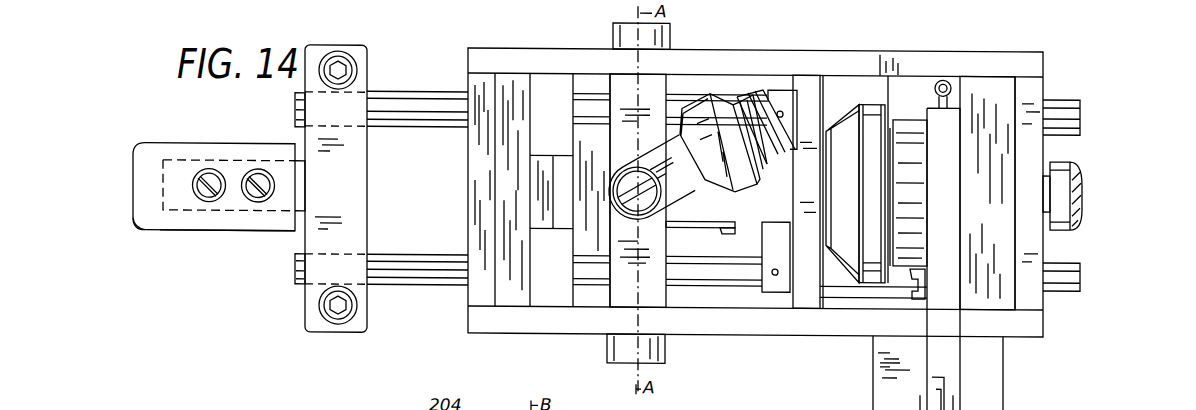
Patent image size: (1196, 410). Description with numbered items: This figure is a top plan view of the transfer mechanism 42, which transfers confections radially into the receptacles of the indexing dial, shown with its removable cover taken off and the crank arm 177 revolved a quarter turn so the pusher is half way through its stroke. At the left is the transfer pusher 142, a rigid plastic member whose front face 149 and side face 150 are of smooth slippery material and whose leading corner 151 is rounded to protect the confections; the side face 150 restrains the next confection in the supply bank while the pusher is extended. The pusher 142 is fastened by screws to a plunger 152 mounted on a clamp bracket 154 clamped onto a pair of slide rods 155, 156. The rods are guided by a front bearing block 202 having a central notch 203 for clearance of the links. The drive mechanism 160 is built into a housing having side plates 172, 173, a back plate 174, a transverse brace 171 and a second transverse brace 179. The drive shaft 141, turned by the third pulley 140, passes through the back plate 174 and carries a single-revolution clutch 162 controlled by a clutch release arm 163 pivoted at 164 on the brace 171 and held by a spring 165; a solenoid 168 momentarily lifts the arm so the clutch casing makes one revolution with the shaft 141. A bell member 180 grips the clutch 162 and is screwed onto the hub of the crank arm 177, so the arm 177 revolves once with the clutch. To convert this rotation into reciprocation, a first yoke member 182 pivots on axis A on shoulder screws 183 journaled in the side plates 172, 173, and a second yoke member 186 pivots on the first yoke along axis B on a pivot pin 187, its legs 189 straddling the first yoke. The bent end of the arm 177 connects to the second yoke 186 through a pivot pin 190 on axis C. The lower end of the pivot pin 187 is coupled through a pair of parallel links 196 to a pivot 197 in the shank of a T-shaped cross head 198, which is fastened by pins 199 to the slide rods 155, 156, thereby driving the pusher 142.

The transfer mechanism 42 is at (389, 341).
The third pulley 140 is at (1070, 185).
The drive shaft 141 is at (1050, 170).
The transfer pusher 142 is at (224, 139).
The front face 149 is at (135, 182).
The side face 150 is at (222, 233).
The leading corner 151 is at (135, 230).
The plunger 152 is at (255, 162).
The clamp bracket 154 is at (355, 189).
The slide rod 155 is at (430, 110).
The slide rod 156 is at (441, 236).
The mechanism 160 is at (788, 313).
The single-revolution clutch 162 is at (922, 188).
The clutch release arm 163 is at (947, 367).
The pivot 164 is at (918, 280).
The spring 165 is at (936, 80).
The solenoid 168 is at (883, 395).
The transverse brace 171 is at (995, 216).
The side plate 172 is at (893, 60).
The side plate 173 is at (725, 326).
The back plate 174 is at (1035, 92).
The crank arm 177 is at (754, 100).
The second transverse brace 179 is at (820, 88).
The bell member 180 is at (878, 108).
The first yoke member 182 is at (619, 142).
The shoulder screws 183 is at (613, 32).
The second yoke member 186 is at (757, 179).
The pivot pin 187 is at (629, 181).
The legs 189 is at (675, 195).
The pivot pin 190 is at (748, 137).
The parallel links 196 is at (687, 226).
The pivot 197 is at (727, 232).
The T-shaped cross head 198 is at (770, 93).
The pins 199 is at (781, 108).
The front bearing block 202 is at (478, 141).
The central notch 203 is at (480, 206).